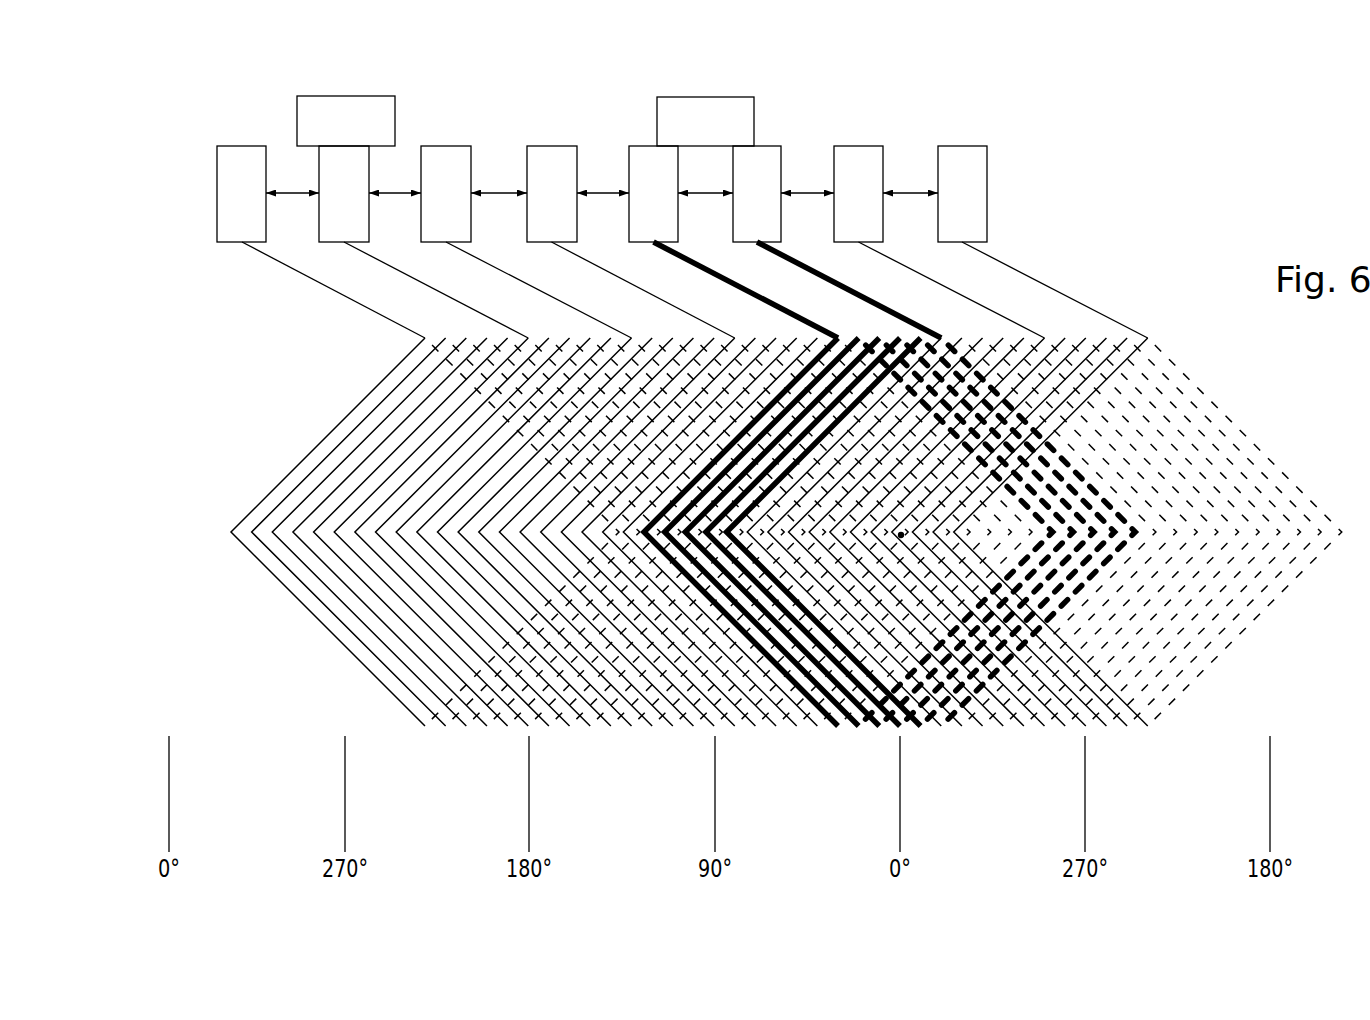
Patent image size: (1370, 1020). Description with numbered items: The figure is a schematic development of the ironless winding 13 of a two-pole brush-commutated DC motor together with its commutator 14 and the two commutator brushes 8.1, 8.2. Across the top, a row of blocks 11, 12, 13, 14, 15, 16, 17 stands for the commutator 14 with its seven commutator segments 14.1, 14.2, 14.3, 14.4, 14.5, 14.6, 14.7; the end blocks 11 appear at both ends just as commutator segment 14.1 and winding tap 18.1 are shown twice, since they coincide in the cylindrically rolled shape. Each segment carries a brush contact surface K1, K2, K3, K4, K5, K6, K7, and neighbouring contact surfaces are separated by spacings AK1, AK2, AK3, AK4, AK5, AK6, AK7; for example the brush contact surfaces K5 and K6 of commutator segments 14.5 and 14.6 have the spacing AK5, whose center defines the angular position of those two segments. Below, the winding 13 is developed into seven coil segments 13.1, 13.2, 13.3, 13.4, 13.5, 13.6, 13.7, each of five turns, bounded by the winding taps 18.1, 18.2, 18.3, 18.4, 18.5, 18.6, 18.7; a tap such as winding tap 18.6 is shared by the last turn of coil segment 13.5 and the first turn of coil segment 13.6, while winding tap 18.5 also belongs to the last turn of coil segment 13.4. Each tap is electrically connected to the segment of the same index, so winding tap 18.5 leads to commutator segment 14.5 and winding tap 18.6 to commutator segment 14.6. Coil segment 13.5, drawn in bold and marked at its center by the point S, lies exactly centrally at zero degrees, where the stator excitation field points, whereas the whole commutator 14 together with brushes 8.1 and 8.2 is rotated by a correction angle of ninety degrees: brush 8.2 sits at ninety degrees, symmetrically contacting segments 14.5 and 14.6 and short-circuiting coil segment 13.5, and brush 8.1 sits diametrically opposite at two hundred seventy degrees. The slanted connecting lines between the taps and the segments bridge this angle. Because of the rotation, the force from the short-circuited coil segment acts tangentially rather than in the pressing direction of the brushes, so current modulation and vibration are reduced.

The coil unit 11 is at (602, 194).
The coil unit 12 is at (344, 194).
The ironless winding 13 is at (446, 194).
The commutator 14 is at (552, 194).
The coil unit 15 is at (653, 194).
The coil unit 16 is at (757, 194).
The coil unit 17 is at (858, 194).
The commutator brush 8.1 is at (344, 105).
The commutator brush 8.2 is at (700, 105).
The commutator segment 14.1 is at (217, 222).
The commutator segment 14.2 is at (318, 202).
The commutator segment 14.3 is at (420, 202).
The commutator segment 14.4 is at (526, 202).
The commutator segment 14.5 is at (628, 202).
The commutator segment 14.6 is at (732, 202).
The commutator segment 14.7 is at (833, 202).
The winding tap 18.1 is at (786, 519).
The winding tap 18.2 is at (569, 519).
The winding tap 18.3 is at (673, 519).
The winding tap 18.4 is at (776, 519).
The winding tap 18.5 is at (879, 519).
The winding tap 18.6 is at (982, 519).
The winding tap 18.7 is at (1086, 519).
The coil segment 13.1 is at (466, 728).
The coil segment 13.2 is at (570, 728).
The coil segment 13.3 is at (673, 728).
The coil segment 13.4 is at (776, 728).
The coil segment 13.5 is at (879, 728).
The coil segment 13.6 is at (983, 728).
The coil segment 13.7 is at (1086, 728).
The brush contact surface K1 is at (236, 143).
The brush contact surface K2 is at (346, 143).
The brush contact surface K3 is at (441, 143).
The brush contact surface K4 is at (547, 143).
The brush contact surface K5 is at (643, 143).
The brush contact surface K6 is at (767, 143).
The brush contact surface K7 is at (855, 143).
The spacing AK1 is at (284, 192).
The spacing AK2 is at (387, 192).
The spacing AK3 is at (494, 190).
The spacing AK4 is at (596, 190).
The spacing AK5 is at (700, 192).
The spacing AK6 is at (799, 190).
The spacing AK7 is at (904, 190).
The sensor position S is at (903, 534).